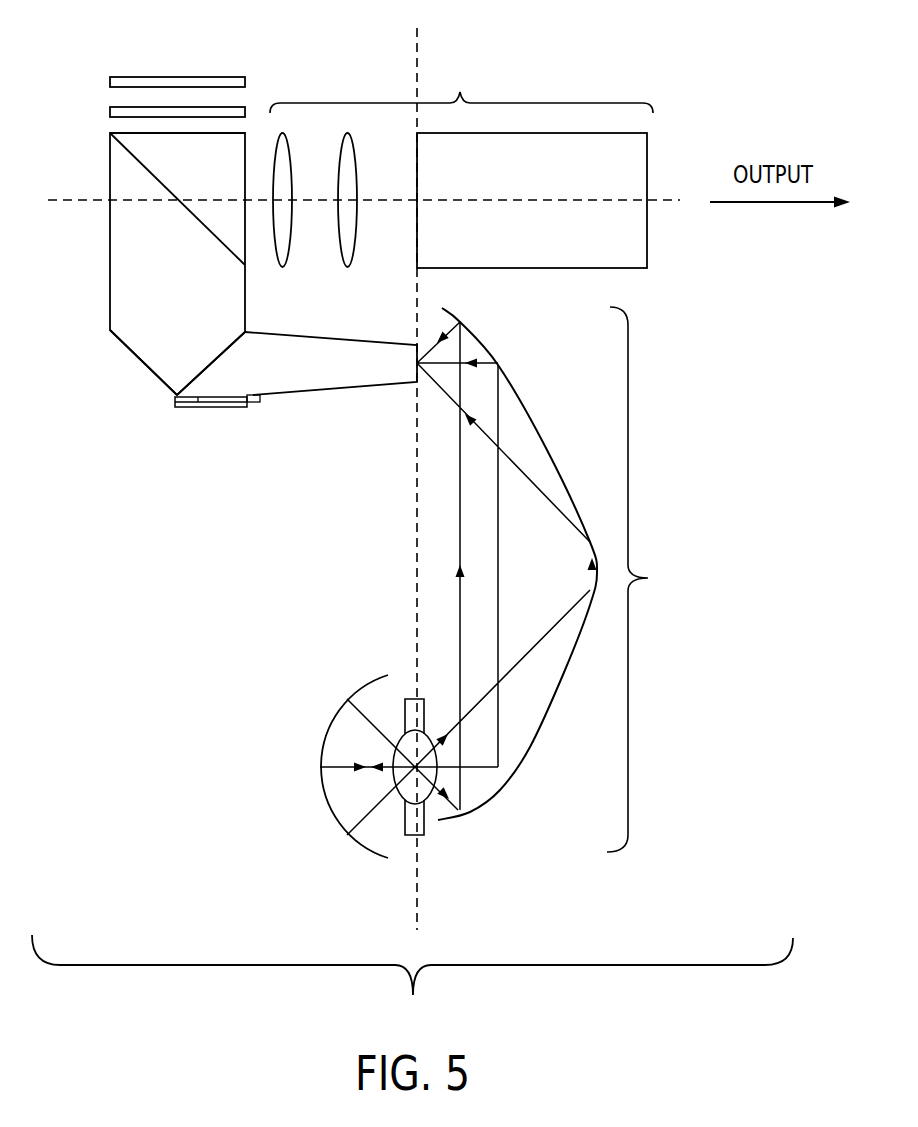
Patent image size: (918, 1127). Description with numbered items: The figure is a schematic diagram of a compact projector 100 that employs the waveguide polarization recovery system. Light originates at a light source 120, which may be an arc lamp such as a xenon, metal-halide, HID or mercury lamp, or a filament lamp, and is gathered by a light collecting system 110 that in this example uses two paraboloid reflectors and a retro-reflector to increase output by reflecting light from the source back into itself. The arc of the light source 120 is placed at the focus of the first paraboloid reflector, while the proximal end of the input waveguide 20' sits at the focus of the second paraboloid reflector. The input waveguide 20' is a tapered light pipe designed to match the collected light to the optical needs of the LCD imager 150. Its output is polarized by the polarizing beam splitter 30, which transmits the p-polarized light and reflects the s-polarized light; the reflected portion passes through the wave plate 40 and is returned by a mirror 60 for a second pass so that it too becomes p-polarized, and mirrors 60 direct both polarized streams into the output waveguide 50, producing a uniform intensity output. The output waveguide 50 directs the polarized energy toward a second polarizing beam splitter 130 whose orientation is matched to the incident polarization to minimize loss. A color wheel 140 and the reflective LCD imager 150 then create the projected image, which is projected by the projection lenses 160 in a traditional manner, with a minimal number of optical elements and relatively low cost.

The projector 100 is at (412, 984).
The light collecting system 110 is at (551, 579).
The light source 120 is at (424, 830).
The input waveguide 20' is at (331, 340).
The polarizing beam splitter 30 is at (211, 363).
The wave plate 40 is at (255, 402).
The output waveguide 50 is at (110, 250).
The mirror 60 is at (138, 360).
The second polarizing beam splitter 130 is at (135, 158).
The color wheel 140 is at (245, 112).
The LCD imager 150 is at (180, 77).
The projection lenses 160 is at (460, 91).